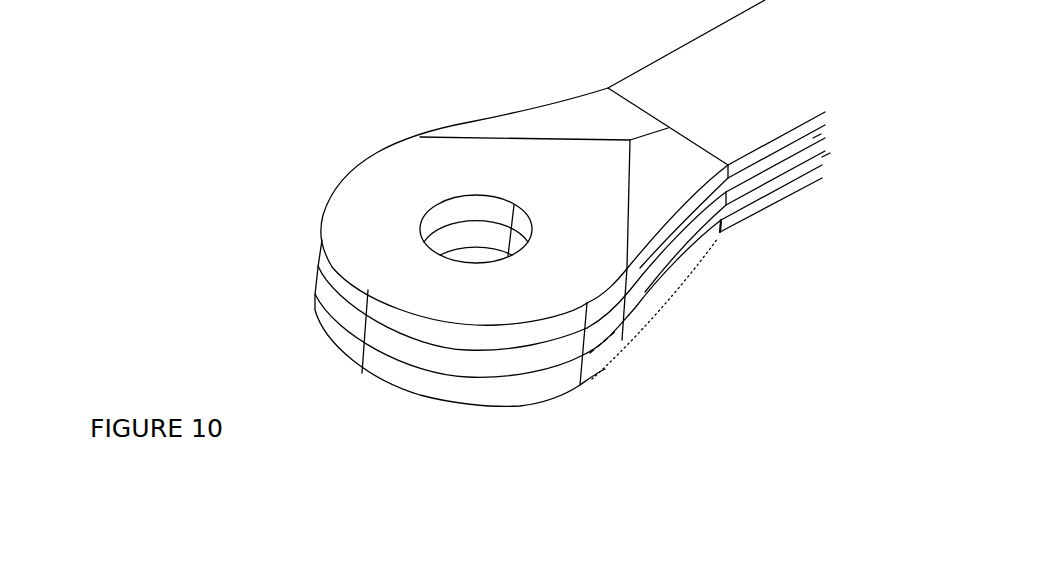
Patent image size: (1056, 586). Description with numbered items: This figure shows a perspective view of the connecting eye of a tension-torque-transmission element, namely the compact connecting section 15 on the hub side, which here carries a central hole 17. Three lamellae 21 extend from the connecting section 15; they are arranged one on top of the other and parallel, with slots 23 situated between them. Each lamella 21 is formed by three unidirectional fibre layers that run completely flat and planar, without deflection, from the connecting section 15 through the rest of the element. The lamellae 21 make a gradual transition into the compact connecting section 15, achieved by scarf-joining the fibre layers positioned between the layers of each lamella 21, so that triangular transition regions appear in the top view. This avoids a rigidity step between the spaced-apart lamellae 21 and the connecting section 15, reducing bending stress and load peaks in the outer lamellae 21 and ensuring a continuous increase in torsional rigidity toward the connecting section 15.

The connecting section on the hub side 15 is at (357, 178).
The hole 17 is at (473, 207).
The lamella 21 is at (812, 125).
The slot 23 is at (813, 140).